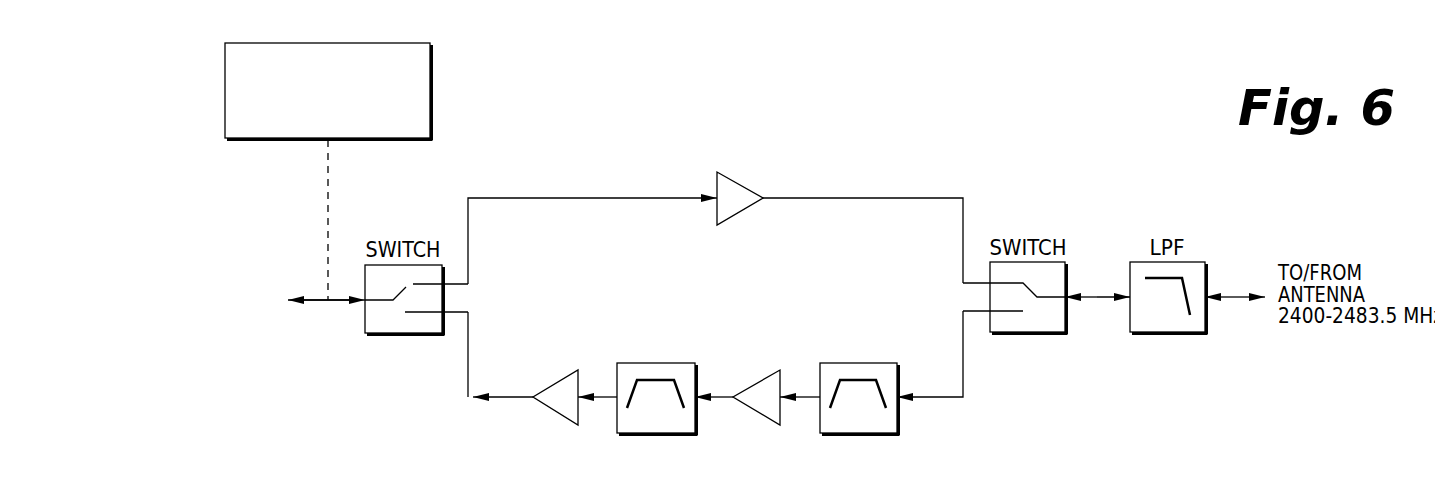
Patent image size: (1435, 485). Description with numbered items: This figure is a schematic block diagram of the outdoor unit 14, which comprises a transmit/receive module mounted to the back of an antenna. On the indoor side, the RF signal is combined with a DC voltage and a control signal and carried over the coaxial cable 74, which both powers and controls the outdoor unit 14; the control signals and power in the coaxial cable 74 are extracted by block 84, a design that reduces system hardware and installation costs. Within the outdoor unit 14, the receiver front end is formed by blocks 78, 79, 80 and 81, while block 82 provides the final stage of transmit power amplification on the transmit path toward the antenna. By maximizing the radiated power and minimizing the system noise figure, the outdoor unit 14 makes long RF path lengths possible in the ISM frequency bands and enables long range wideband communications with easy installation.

The outdoor unit 14 is at (1033, 108).
The coaxial cable 74 is at (320, 302).
The receiver front end block 78 is at (897, 370).
The receiver front end block 79 is at (780, 377).
The receiver front end block 80 is at (695, 370).
The receiver front end block 81 is at (582, 377).
The final stage of transmit power amplification 82 is at (743, 185).
The control signal and power extraction block 84 is at (433, 90).